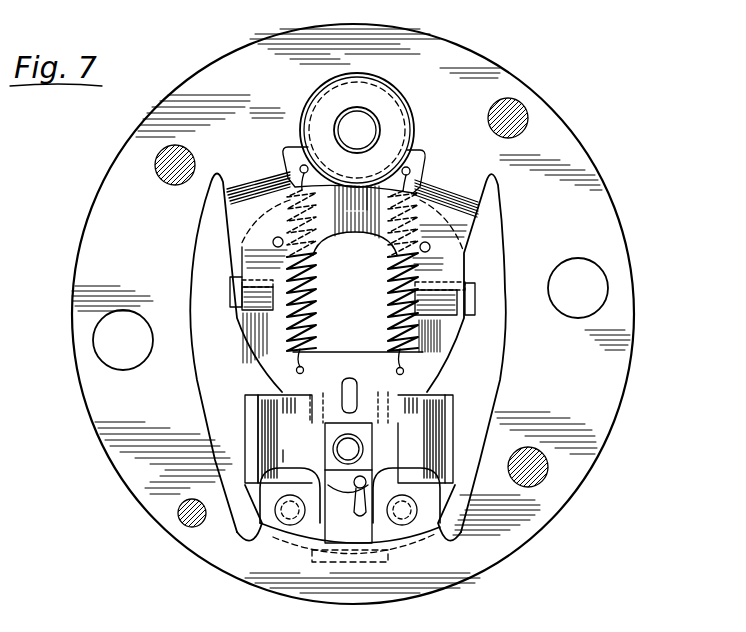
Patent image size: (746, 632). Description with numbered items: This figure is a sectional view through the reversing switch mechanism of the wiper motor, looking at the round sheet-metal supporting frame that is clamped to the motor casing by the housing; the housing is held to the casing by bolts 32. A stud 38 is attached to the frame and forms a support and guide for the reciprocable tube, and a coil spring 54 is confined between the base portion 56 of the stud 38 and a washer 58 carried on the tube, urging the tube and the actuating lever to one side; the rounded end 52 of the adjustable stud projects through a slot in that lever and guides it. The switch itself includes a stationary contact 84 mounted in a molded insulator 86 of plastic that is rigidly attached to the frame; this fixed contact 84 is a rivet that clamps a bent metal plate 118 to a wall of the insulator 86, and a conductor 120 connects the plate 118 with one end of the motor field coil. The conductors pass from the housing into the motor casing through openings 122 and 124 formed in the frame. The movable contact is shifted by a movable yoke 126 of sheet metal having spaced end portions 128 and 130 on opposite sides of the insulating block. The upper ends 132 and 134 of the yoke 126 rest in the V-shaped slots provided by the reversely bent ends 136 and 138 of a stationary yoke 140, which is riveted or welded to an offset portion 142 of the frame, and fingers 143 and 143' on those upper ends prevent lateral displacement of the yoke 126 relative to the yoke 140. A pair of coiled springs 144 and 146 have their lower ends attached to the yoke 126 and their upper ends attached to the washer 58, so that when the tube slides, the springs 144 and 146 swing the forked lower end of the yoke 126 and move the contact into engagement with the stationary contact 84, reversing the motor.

The bolts 32 is at (157, 155).
The stud 38 is at (357, 133).
The rounded end 52 is at (540, 473).
The coil spring 54 is at (587, 220).
The base portion 56 is at (373, 97).
The washer 58 is at (410, 166).
The stationary contact 84 is at (363, 450).
The molded insulator 86 is at (413, 418).
The bent metal plate 118 is at (355, 490).
The conductor 120 is at (340, 483).
The opening 122 is at (600, 297).
The opening 124 is at (95, 348).
The movable yoke 126 is at (463, 363).
The end portion 128 is at (312, 388).
The end portion 130 is at (372, 390).
The upper end 132 is at (447, 312).
The upper end 134 is at (230, 300).
The reversely bent end 136 is at (447, 300).
The reversely bent end 138 is at (260, 293).
The stationary yoke 140 is at (360, 220).
The offset portion 142 is at (263, 228).
The finger 143 is at (487, 256).
The finger 143' is at (211, 262).
The coiled spring 144 is at (370, 327).
The coiled spring 146 is at (317, 295).